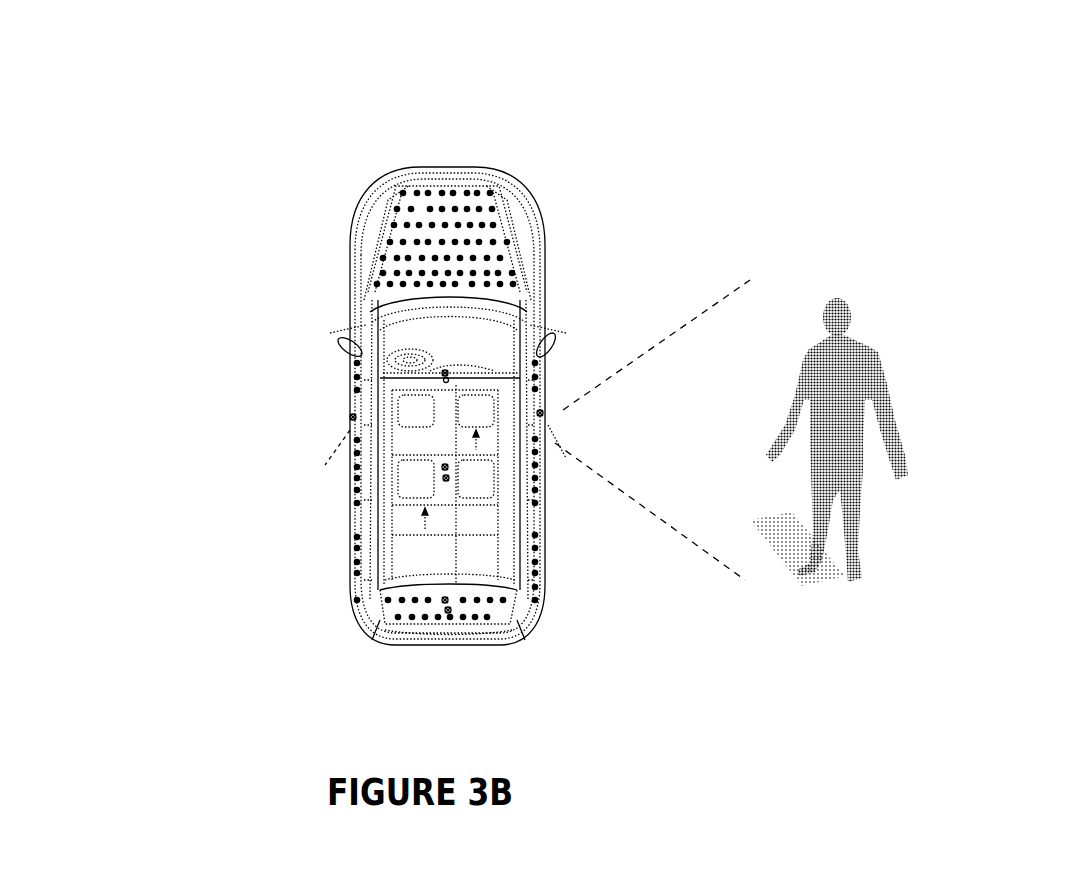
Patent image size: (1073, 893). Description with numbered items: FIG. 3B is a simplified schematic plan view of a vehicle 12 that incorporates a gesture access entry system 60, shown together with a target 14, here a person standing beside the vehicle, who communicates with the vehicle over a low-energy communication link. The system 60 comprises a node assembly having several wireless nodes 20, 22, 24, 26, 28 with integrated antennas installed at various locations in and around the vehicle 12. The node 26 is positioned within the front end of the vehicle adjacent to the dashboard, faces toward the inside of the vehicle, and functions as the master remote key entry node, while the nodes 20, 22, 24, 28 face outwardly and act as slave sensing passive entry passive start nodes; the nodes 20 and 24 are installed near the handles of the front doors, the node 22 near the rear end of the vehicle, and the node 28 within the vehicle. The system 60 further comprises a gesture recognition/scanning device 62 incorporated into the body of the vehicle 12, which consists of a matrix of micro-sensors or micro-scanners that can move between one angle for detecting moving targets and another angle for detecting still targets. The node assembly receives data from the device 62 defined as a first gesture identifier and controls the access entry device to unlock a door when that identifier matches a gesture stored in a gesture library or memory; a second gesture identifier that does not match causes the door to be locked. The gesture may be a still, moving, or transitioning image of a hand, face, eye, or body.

The vehicle 12 is at (350, 240).
The target 14 is at (870, 327).
The wireless node 20 is at (347, 423).
The wireless node 22 is at (467, 610).
The wireless node 24 is at (537, 407).
The wireless node 26 is at (457, 353).
The wireless node 28 is at (458, 482).
The gesture access entry system 60 is at (793, 140).
The gesture recognition/scanning device 62 is at (445, 178).